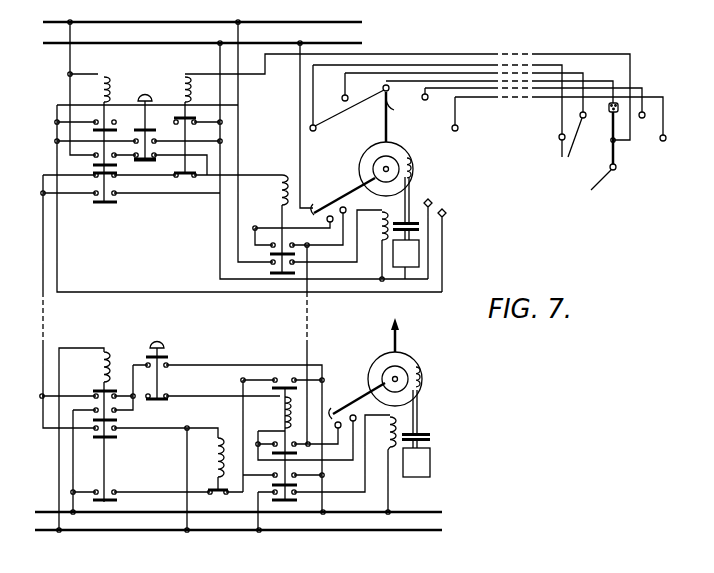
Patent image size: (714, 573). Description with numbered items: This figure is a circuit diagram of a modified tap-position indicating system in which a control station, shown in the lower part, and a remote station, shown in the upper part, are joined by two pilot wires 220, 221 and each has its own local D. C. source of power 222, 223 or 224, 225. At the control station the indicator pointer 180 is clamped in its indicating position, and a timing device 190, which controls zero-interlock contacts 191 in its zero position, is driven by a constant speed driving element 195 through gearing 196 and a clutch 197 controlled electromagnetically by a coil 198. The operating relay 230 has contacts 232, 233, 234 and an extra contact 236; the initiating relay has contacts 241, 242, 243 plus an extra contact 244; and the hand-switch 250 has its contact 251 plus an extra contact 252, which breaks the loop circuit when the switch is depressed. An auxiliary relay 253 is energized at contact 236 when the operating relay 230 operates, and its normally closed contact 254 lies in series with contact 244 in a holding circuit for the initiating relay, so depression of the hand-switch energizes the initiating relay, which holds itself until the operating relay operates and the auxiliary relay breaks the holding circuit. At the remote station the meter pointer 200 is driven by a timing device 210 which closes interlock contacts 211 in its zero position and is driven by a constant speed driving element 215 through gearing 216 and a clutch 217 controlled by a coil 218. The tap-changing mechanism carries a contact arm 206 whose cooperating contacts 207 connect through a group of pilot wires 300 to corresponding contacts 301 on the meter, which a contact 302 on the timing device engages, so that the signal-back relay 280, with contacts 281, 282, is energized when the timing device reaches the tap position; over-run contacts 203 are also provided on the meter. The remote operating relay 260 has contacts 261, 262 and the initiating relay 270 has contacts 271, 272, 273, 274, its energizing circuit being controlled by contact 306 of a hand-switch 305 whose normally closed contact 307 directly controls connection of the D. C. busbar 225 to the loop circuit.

The indicator pointer 180 is at (400, 341).
The timing device 190 is at (367, 384).
The zero-interlock contacts 191 is at (342, 408).
The constant speed driving element 195 is at (420, 464).
The gearing 196 is at (427, 376).
The clutch 197 is at (430, 437).
The coil 198 is at (401, 428).
The meter pointer 200 is at (388, 128).
The over-run contacts 203 is at (433, 205).
The contact arm 206 is at (595, 153).
The cooperating contacts 207 is at (565, 145).
The timing device 210 is at (362, 182).
The interlock contacts 211 is at (337, 205).
The constant speed driving element 215 is at (405, 258).
The gearing 216 is at (414, 168).
The clutch 217 is at (419, 226).
The coil 218 is at (381, 248).
The pilot wire 220 is at (43, 321).
The pilot wire 221 is at (308, 318).
The local D. C. source of power 222 is at (254, 513).
The local D. C. source of power 223 is at (254, 532).
The local D. C. source of power 224 is at (217, 43).
The D. C. busbar 225 is at (217, 21).
The operating relay 230 is at (270, 406).
The contact 232 is at (281, 385).
The contact 233 is at (282, 451).
The contact 234 is at (278, 502).
The extra contact 236 is at (297, 488).
The contact 241 is at (117, 382).
The contact 242 is at (117, 420).
The contact 243 is at (117, 438).
The extra contact 244 is at (117, 496).
The hand-switch 250 is at (157, 340).
The contact 251 is at (164, 356).
The extra contact 252 is at (161, 400).
The auxiliary relay 253 is at (212, 465).
The normally closed contact 254 is at (217, 494).
The operating relay 260 is at (278, 182).
The contact 261 is at (272, 257).
The contact 262 is at (281, 276).
The initiating relay 270 is at (98, 90).
The contact 271 is at (100, 177).
The contact 272 is at (108, 204).
The contact 273 is at (93, 130).
The contact 274 is at (93, 165).
The signal-back relay 280 is at (180, 78).
The contact 281 is at (184, 177).
The contact 282 is at (177, 115).
The group of pilot wires 300 is at (513, 66).
The contacts 301 is at (318, 127).
The contact 302 is at (311, 204).
The hand-switch 305 is at (144, 93).
The contact 306 is at (143, 128).
The normally closed contact 307 is at (143, 162).